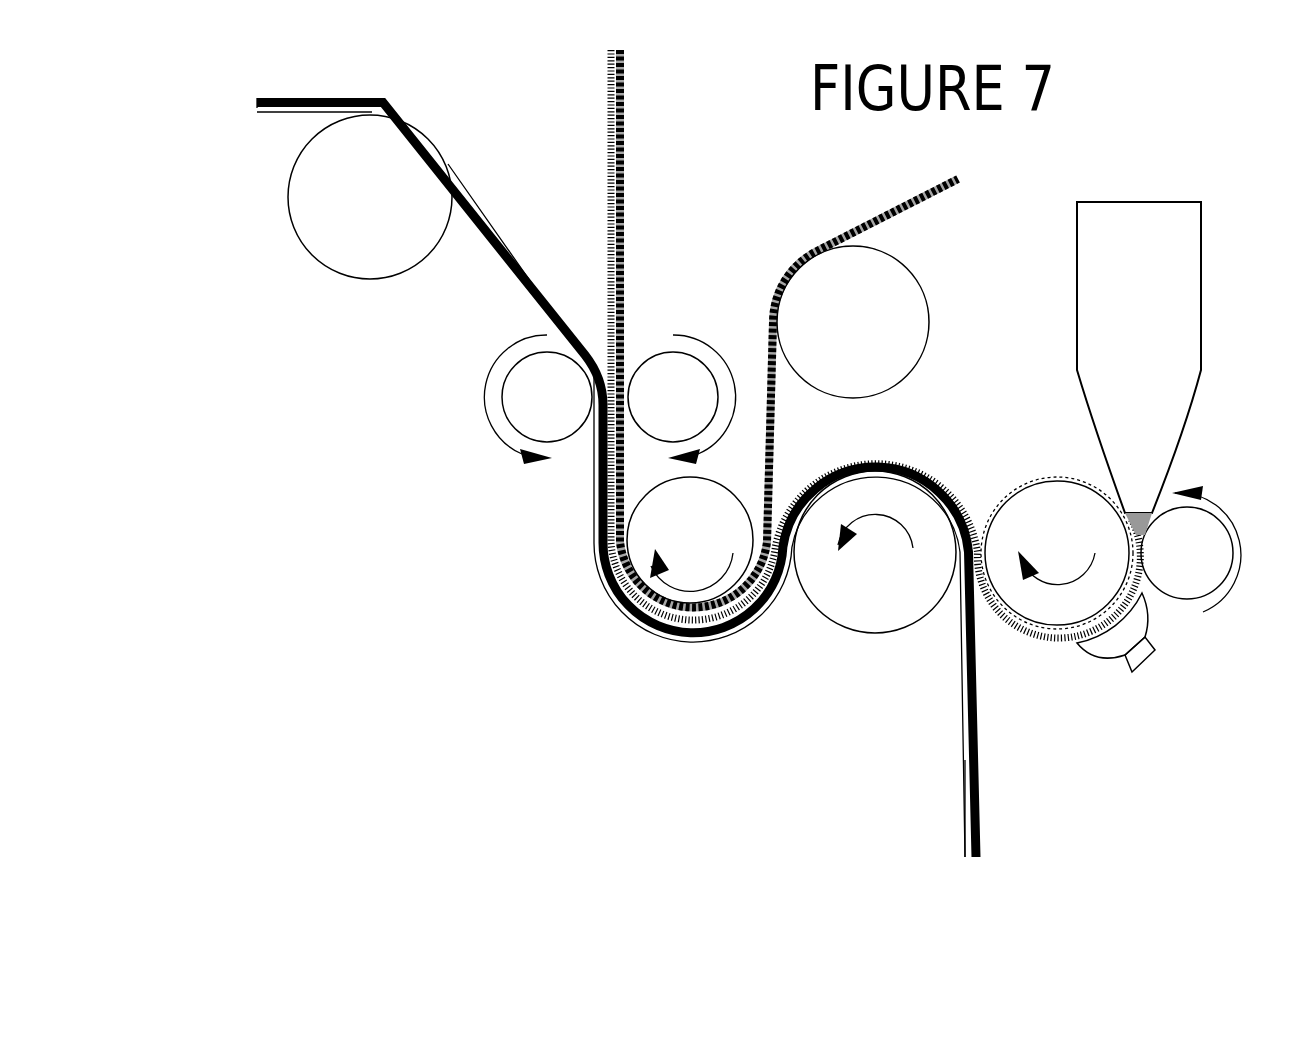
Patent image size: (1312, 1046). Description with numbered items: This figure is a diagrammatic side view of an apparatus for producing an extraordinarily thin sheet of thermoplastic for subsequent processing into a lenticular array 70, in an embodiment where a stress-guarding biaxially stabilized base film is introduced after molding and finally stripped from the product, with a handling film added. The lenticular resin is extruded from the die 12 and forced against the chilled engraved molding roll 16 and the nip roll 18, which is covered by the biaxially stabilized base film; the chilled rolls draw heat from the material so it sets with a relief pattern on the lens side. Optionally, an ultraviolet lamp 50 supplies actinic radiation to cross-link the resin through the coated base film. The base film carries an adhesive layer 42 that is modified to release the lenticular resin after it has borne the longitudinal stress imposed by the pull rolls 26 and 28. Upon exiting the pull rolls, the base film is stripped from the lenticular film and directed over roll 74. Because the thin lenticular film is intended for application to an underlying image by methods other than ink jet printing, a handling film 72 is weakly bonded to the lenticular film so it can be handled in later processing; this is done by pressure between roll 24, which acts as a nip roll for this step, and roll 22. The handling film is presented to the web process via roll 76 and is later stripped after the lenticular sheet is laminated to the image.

The die 12 is at (1147, 285).
The engraved molding roll 16 is at (1057, 553).
The nip roll 18 is at (1187, 553).
The roll 22 is at (876, 552).
The roll 24 is at (690, 553).
The pull roll 26 is at (668, 397).
The pull roll 28 is at (547, 397).
The adhesive layer 42 is at (963, 782).
The ultraviolet lamp 50 is at (1140, 665).
The lenticular array 70 is at (616, 792).
The handling film 72 is at (623, 166).
The roll 74 is at (372, 197).
The roll 76 is at (853, 322).